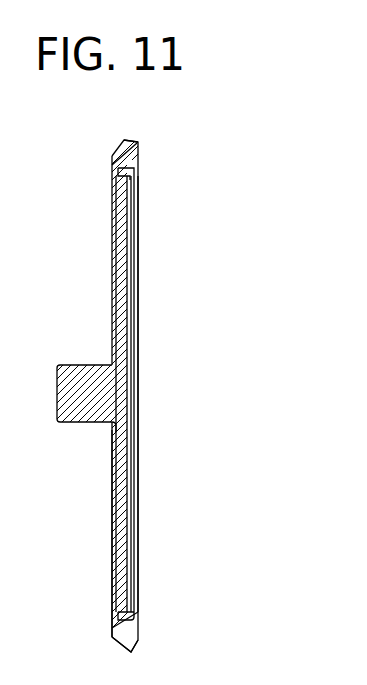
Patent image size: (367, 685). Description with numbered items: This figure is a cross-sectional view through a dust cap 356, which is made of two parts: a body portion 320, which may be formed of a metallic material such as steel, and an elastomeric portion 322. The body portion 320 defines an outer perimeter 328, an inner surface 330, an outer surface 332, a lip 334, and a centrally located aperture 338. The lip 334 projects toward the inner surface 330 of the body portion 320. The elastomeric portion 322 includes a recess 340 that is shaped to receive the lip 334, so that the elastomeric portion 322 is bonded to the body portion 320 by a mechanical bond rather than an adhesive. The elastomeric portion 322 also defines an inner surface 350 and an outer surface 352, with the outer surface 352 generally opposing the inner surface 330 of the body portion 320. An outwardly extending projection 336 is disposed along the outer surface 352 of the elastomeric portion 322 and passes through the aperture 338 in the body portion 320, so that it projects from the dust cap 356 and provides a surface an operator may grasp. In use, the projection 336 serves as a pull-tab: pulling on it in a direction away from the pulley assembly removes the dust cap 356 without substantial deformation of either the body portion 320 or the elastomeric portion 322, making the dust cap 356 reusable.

The dust cap 356 is at (162, 170).
The recess 340 is at (137, 156).
The outwardly extending projection 336 is at (66, 408).
The centrally located aperture 338 is at (130, 418).
The inner surface of elastomeric portion 350 is at (133, 452).
The outer surface of elastomeric portion 352 is at (116, 461).
The inner surface of body portion 330 is at (139, 478).
The outer surface of body portion 332 is at (112, 512).
The body portion 320 is at (112, 558).
The lip 334 is at (133, 597).
The outer perimeter 328 is at (112, 600).
The elastomeric portion 322 is at (138, 630).